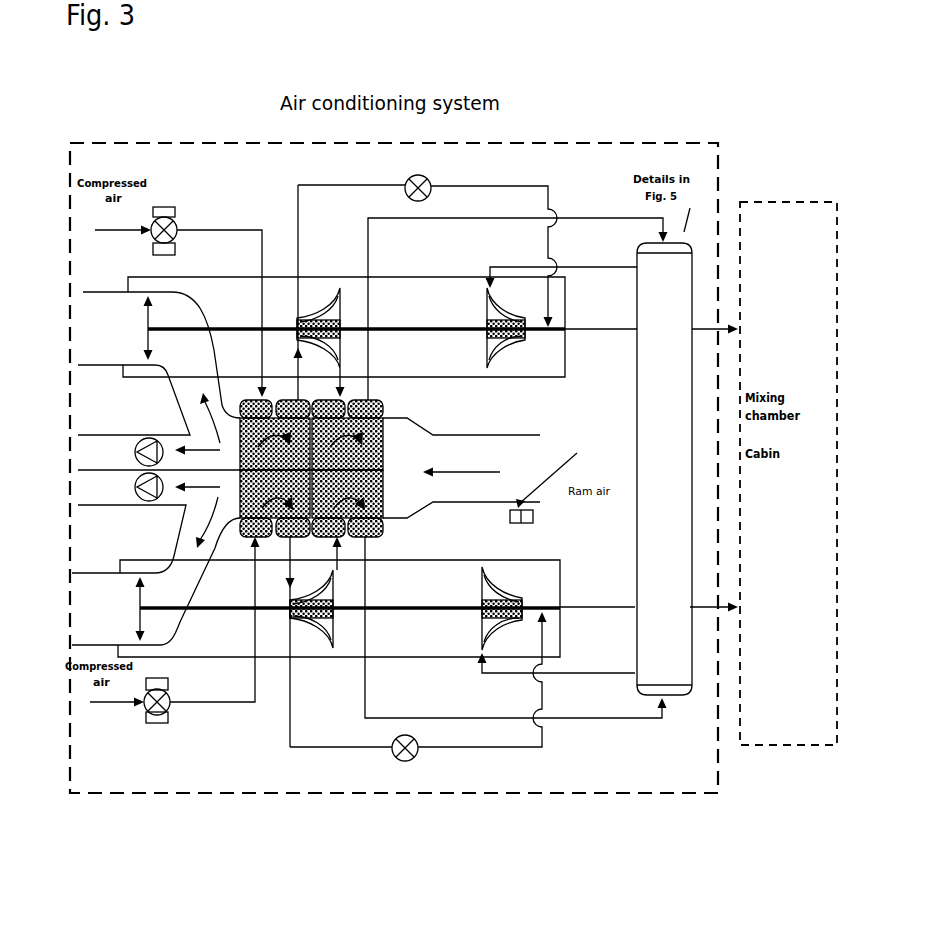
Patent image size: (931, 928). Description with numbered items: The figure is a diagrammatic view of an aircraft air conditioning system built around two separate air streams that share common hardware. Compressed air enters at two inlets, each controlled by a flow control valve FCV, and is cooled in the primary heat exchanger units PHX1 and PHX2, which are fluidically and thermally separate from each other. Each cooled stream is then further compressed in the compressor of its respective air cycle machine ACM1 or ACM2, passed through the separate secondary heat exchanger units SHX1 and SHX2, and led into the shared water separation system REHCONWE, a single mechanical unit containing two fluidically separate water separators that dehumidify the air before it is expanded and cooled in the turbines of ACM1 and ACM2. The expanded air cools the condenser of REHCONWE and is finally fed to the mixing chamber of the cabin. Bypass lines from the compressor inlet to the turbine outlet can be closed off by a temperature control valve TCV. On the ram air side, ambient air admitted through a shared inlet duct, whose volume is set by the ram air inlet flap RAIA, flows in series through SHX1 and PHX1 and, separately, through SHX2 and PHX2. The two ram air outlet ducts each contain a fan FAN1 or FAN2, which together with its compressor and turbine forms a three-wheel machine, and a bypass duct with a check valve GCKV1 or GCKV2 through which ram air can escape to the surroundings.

The flow control valve FCV is at (178, 466).
The temperature control valve TCV is at (423, 468).
The fan FAN1 is at (321, 356).
The fan FAN2 is at (316, 589).
The check valve GCKV1 is at (230, 441).
The check valve GCKV2 is at (146, 523).
The primary heat exchanger unit PHX1 is at (275, 435).
The primary heat exchanger unit PHX2 is at (275, 503).
The secondary heat exchanger unit SHX1 is at (347, 435).
The secondary heat exchanger unit SHX2 is at (347, 503).
The air cycle machine ACM1 is at (443, 292).
The air cycle machine ACM2 is at (439, 642).
The ram air inlet flap RAIA is at (545, 489).
The water separation system REHCONWE is at (528, 468).